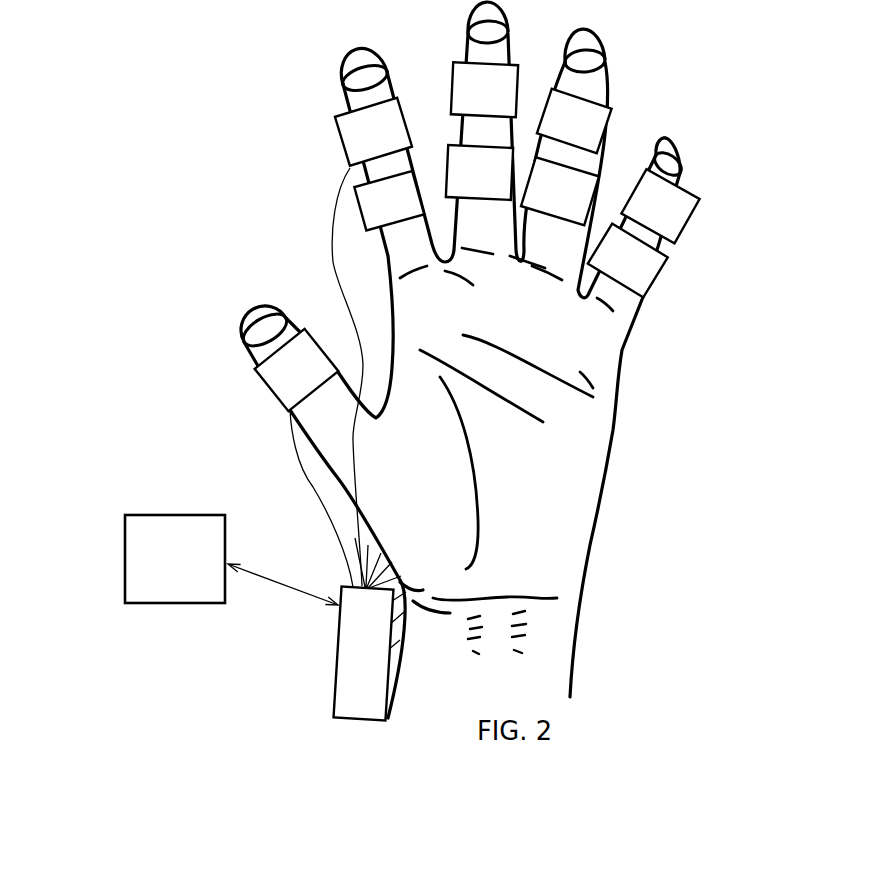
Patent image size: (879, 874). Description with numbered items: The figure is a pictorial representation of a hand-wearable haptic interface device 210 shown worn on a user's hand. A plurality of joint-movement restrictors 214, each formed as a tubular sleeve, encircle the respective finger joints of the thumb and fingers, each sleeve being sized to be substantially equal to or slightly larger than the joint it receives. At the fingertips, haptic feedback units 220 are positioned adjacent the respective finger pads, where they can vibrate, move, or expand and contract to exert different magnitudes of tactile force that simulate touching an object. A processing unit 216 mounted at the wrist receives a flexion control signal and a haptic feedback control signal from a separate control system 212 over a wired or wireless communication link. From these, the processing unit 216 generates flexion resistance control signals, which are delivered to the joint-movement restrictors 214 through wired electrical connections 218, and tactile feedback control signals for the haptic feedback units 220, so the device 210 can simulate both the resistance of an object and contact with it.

The hand-wearable haptic interface device 210 is at (373, 359).
The control system 212 is at (180, 560).
The joint-movement restrictor 214 is at (481, 233).
The processing unit 216 is at (327, 629).
The wired electrical connections 218 is at (295, 377).
The haptic feedback unit 220 is at (462, 182).